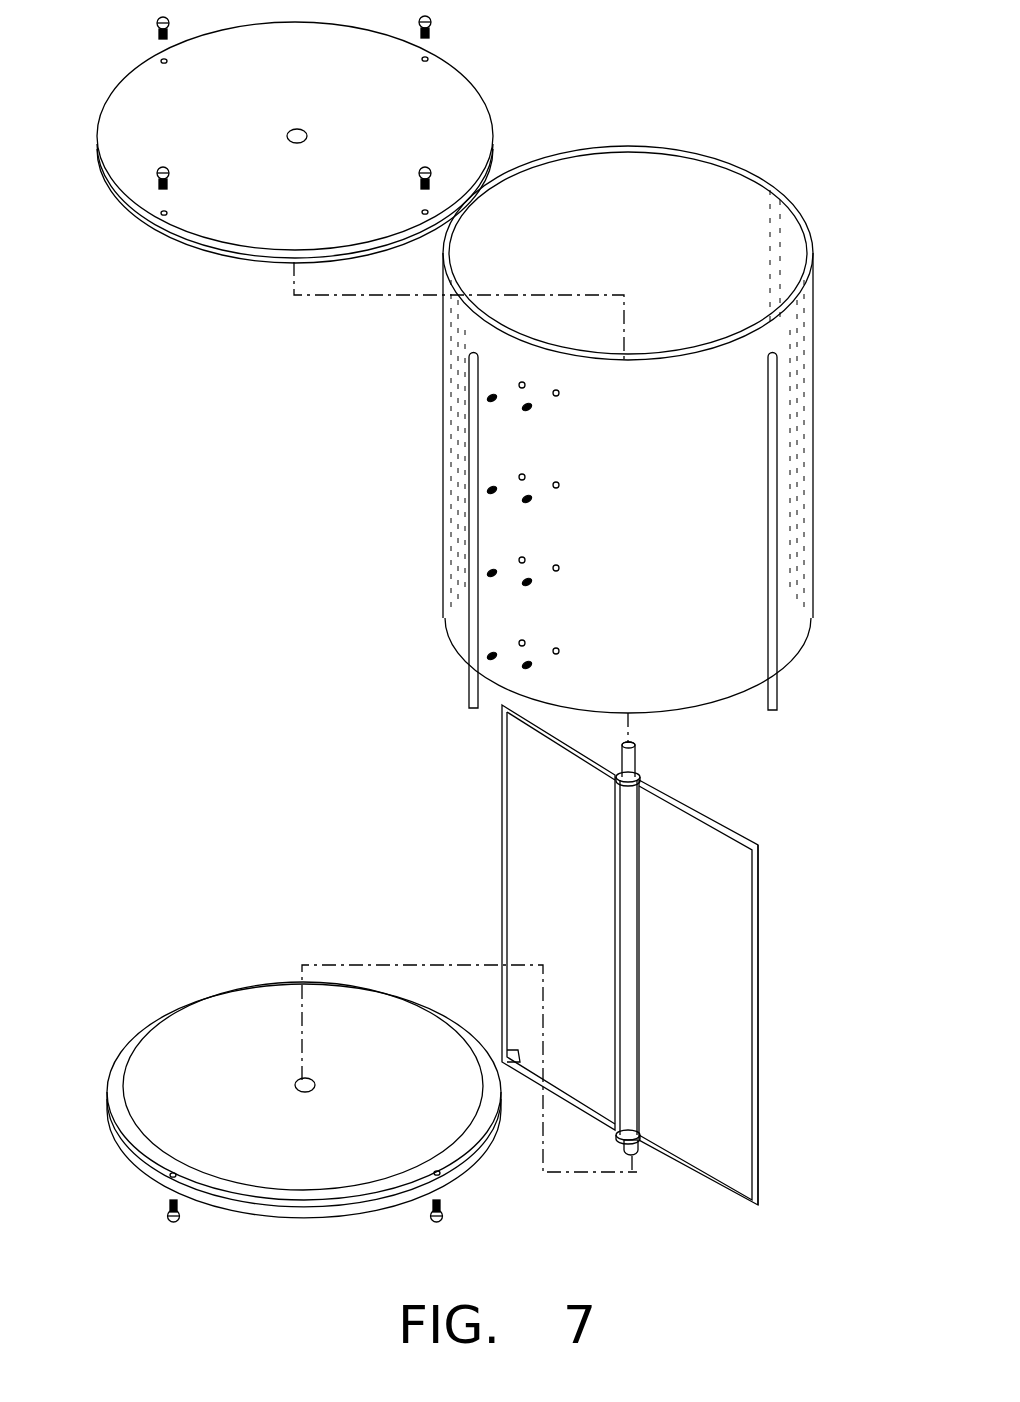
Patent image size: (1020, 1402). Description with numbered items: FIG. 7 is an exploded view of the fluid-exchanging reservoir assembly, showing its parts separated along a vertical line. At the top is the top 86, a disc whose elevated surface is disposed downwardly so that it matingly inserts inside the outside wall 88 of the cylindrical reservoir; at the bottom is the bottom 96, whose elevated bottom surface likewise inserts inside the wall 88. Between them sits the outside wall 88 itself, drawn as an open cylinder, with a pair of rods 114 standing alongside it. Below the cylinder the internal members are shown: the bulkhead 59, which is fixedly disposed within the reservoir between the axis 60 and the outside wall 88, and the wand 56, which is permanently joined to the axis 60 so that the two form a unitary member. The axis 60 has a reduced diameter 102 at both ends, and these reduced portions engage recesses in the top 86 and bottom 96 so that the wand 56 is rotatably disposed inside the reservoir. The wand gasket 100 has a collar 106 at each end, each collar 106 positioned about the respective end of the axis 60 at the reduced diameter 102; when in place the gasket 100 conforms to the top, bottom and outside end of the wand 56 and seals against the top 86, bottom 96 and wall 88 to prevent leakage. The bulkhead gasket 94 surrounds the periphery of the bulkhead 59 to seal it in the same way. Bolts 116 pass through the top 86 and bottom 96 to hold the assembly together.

The wand 56 is at (735, 1057).
The bulkhead 59 is at (517, 776).
The axis 60 is at (637, 845).
The top 86 is at (490, 104).
The outside wall 88 is at (813, 395).
The bulkhead gasket 94 is at (600, 1128).
The bottom 96 is at (142, 1078).
The wand gasket 100 is at (760, 917).
The reduced diameter 102 is at (637, 745).
The collar 106 is at (640, 778).
The support rod 114 is at (468, 632).
The bolts 116 is at (428, 18).